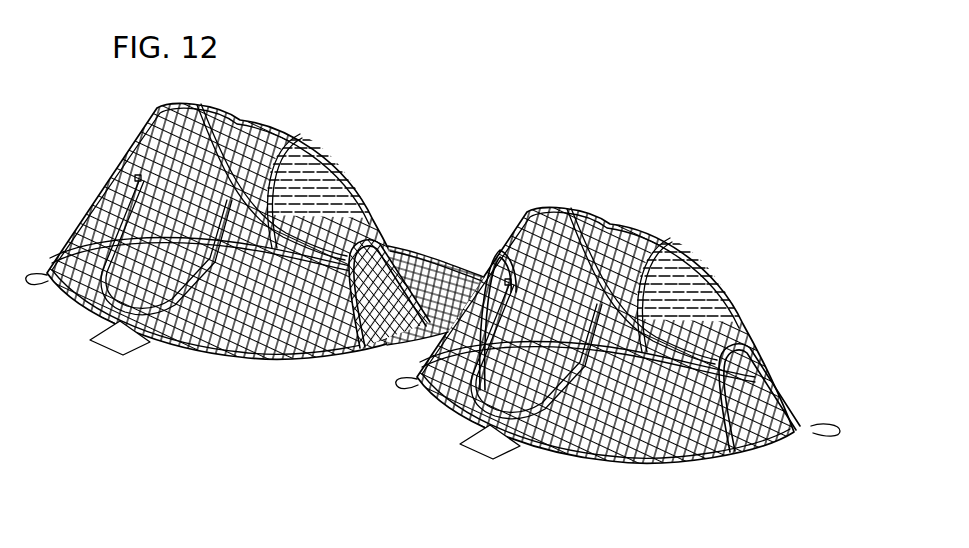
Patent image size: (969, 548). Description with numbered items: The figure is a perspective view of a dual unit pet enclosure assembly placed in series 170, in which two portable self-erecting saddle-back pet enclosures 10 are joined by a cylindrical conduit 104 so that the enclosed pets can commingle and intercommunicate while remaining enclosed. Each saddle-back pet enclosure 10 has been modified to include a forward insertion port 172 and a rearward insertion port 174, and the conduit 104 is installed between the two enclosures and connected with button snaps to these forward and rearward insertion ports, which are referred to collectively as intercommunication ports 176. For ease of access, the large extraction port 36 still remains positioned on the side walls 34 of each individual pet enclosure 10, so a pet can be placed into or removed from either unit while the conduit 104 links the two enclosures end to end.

The saddle-back pet enclosure 10 is at (433, 296).
The side wall 34 is at (80, 300).
The extraction port 36 is at (163, 297).
The cylindrical conduit 104 is at (410, 248).
The dual unit pet enclosure assembly in series 170 is at (433, 296).
The forward insertion port 172 is at (385, 233).
The rearward insertion port 174 is at (511, 242).
The intercommunication port 176 is at (342, 312).